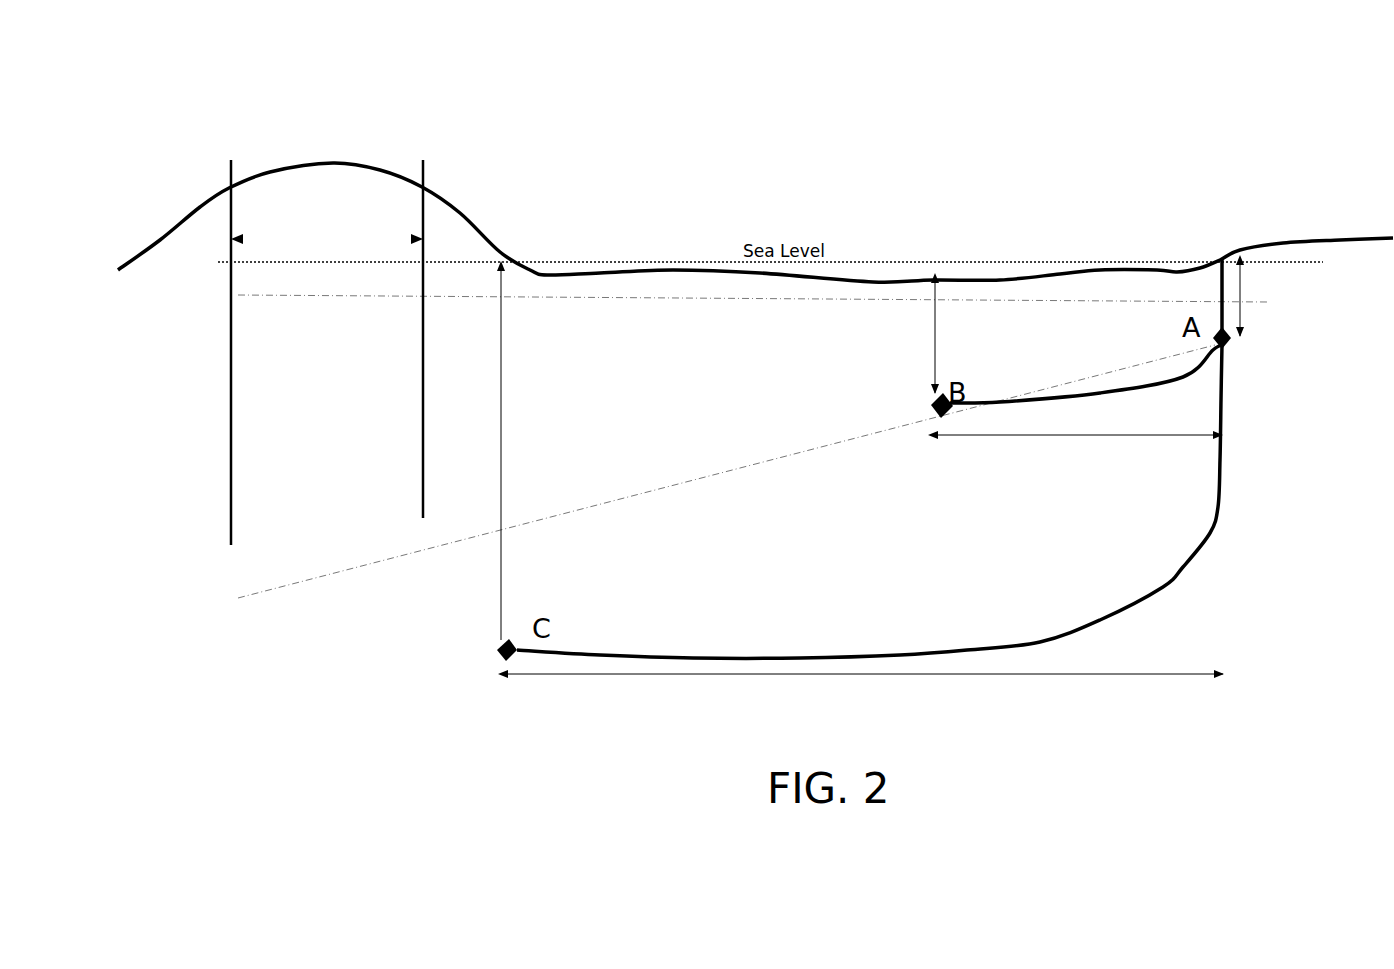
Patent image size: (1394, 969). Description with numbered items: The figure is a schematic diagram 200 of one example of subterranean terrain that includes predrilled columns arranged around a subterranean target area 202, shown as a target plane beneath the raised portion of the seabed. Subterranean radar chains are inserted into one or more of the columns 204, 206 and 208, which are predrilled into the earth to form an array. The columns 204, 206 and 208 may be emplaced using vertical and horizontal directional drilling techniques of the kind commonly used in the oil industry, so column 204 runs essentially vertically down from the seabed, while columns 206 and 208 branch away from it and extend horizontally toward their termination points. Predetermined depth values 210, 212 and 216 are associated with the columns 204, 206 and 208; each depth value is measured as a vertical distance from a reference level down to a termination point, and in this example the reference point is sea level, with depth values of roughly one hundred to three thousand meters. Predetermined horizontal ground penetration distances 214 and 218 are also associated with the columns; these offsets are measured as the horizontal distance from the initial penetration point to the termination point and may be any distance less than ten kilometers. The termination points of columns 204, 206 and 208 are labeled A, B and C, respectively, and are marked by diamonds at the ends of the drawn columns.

The subsea well trajectory diagram 200 is at (1087, 138).
The subterranean target area 202 is at (328, 150).
The column 204 is at (1227, 297).
The column 206 is at (1185, 377).
The column 208 is at (1167, 587).
The depth value 210 is at (1239, 300).
The depth value 212 is at (935, 337).
The horizontal ground penetration distance 214 is at (1079, 436).
The depth value 216 is at (501, 455).
The horizontal ground penetration distance 218 is at (865, 675).